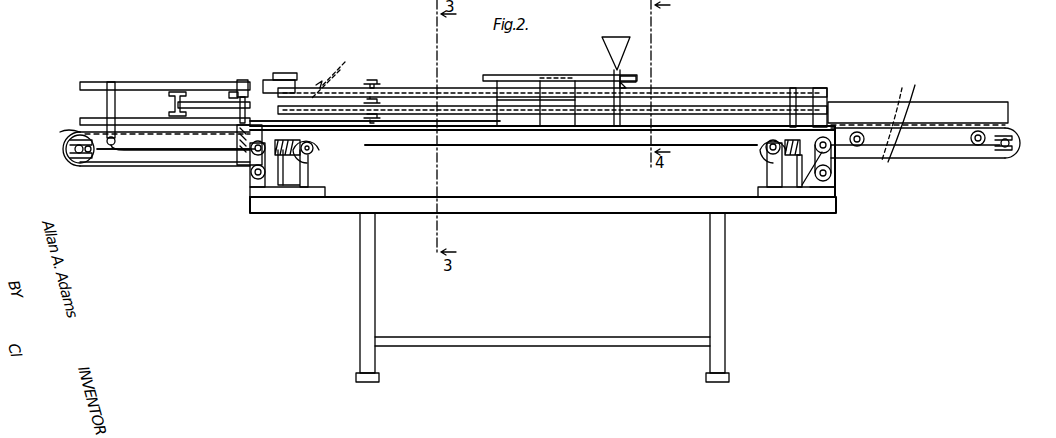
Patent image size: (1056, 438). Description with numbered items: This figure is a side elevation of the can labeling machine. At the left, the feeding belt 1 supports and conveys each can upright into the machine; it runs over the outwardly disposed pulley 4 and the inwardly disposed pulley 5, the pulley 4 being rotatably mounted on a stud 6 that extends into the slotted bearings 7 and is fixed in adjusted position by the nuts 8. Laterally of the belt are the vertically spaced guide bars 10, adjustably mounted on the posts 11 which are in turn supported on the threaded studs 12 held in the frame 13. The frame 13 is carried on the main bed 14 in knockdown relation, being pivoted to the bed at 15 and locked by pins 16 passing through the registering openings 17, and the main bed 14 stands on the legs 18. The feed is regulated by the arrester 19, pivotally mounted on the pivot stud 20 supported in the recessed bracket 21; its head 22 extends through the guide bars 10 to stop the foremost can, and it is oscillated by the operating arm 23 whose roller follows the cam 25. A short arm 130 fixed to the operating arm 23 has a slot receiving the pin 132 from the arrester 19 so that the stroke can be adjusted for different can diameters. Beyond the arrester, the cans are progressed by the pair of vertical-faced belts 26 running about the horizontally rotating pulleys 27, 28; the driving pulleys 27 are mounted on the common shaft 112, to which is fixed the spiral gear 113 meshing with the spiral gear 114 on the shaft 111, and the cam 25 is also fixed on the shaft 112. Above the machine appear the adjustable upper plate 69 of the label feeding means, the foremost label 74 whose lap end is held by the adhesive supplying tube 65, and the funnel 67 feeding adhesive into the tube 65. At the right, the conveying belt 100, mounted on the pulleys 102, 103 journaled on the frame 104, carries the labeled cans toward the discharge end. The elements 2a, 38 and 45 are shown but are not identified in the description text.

The feeding belt 1 is at (155, 166).
The frame cross member 2a is at (556, 100).
The outwardly disposed pulley 4 is at (68, 158).
The inwardly disposed pulley 5 is at (322, 150).
The stud 6 is at (80, 153).
The slotted bearings 7 is at (70, 130).
The nuts 8 is at (86, 152).
The guide bars 10 is at (141, 124).
The posts 11 is at (115, 105).
The threaded studs 12 is at (112, 141).
The frame 13 is at (187, 140).
The main bed 14 is at (318, 213).
The pivot 15 is at (254, 152).
The pins 16 is at (250, 195).
The registering openings 17 is at (258, 178).
The legs 18 is at (725, 284).
The arrester 19 is at (200, 103).
The pivot stud 20 is at (240, 88).
The recessed bracket 21 is at (245, 155).
The head 22 is at (182, 92).
The operating arm 23 is at (272, 82).
The cam 25 is at (392, 4).
The belt 26 is at (722, 104).
The pulleys 27 is at (334, 72).
The pulleys 28 is at (806, 98).
The main frame 38 is at (542, 159).
The cam followers 45 is at (373, 81).
The tube 65 is at (628, 80).
The funnel 67 is at (619, 42).
The adjustable upper plate 69 is at (537, 80).
The foremost label 74 is at (502, 79).
The conveying belt 100 is at (918, 113).
The pulley 102 is at (765, 150).
The pulley 103 is at (1010, 152).
The frame 104 is at (948, 140).
The shaft 111 is at (324, 160).
The common shaft 112 is at (285, 152).
The spiral gear 113 is at (305, 135).
The spiral gear 114 is at (318, 146).
The short arm 130 is at (240, 82).
The pin 132 is at (208, 8).